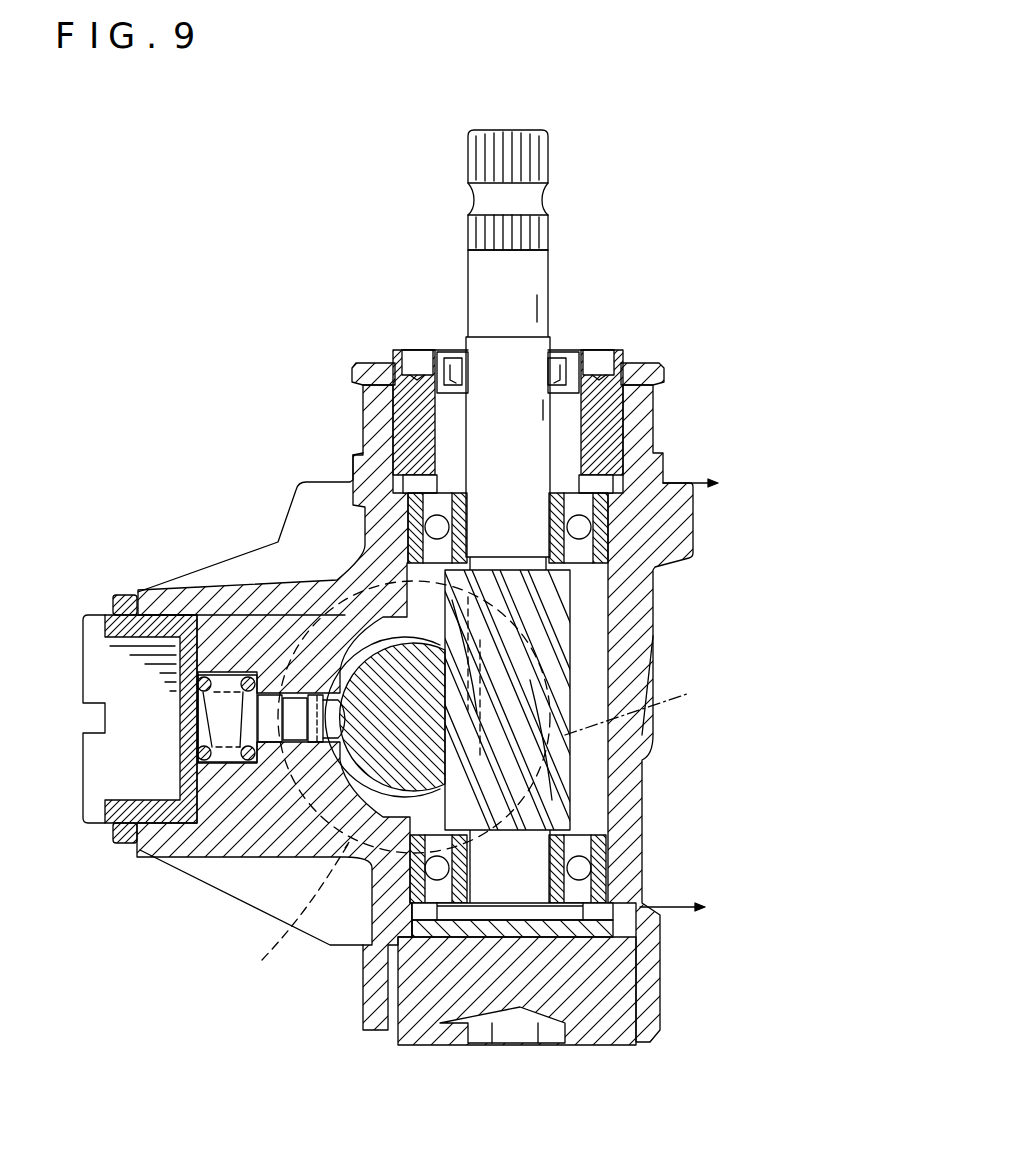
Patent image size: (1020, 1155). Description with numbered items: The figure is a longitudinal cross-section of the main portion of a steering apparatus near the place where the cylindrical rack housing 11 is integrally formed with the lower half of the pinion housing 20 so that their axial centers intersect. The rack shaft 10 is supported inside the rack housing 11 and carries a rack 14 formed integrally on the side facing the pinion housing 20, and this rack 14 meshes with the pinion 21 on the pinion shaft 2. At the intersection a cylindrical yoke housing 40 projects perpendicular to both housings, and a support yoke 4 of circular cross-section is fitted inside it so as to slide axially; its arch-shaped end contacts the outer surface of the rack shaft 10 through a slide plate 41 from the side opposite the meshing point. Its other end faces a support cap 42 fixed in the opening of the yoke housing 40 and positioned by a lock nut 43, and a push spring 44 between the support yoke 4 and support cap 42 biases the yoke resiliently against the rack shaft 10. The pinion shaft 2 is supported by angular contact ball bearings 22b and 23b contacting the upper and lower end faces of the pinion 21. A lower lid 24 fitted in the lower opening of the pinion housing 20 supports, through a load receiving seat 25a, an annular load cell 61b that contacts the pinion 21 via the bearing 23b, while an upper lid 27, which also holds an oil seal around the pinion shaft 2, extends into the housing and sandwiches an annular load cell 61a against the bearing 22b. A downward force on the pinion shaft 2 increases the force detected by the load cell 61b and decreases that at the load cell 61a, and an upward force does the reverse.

The pinion shaft 2 is at (478, 300).
The support yoke 4 is at (275, 677).
The rack shaft 10 is at (200, 858).
The rack housing 11 is at (262, 960).
The rack 14 is at (509, 717).
The pinion housing 20 is at (640, 605).
The pinion 21 is at (565, 770).
The angular contact ball bearing 22b is at (585, 530).
The angular contact ball bearing 23b is at (590, 866).
The lower lid 24 is at (600, 1000).
The load receiving seat 25a is at (460, 928).
The upper lid 27 is at (597, 378).
The yoke housing 40 is at (247, 677).
The slide plate 41 is at (360, 667).
The support cap 42 is at (92, 660).
The lock nut 43 is at (122, 595).
The push spring 44 is at (240, 677).
The load cell 61a is at (598, 470).
The load cell 61b is at (417, 910).